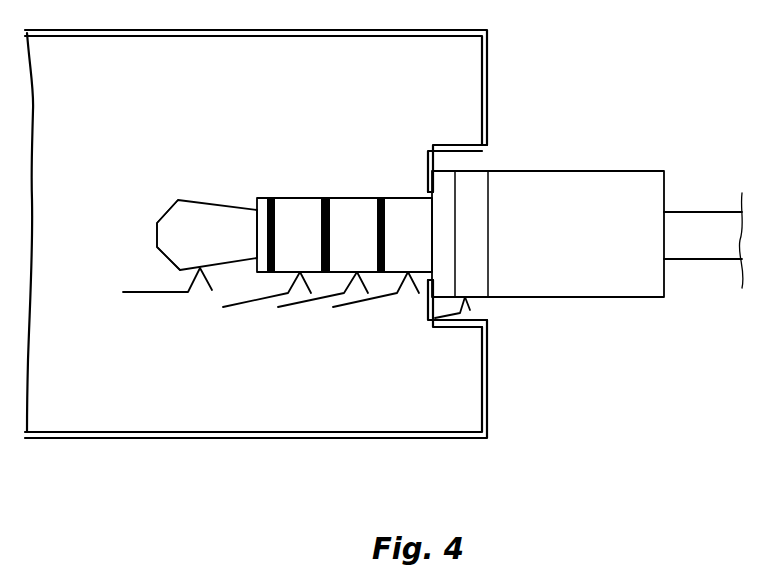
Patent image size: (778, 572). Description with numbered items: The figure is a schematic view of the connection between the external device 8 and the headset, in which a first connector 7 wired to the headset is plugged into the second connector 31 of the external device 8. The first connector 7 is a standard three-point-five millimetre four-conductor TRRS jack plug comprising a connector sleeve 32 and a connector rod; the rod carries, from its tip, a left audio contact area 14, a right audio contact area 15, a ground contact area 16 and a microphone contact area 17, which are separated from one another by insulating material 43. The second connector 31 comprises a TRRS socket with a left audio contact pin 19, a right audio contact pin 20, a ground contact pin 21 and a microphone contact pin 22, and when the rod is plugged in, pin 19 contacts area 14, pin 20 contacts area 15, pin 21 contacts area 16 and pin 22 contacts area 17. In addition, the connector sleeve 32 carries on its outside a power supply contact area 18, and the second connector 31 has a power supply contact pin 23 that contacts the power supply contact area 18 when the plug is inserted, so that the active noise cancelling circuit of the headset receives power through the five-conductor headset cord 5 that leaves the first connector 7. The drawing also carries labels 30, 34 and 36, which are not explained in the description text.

The headset cord 5 is at (690, 242).
The first connector 7 is at (548, 182).
The external device 8 is at (367, 434).
The left audio contact area 14 is at (229, 250).
The right audio contact area 15 is at (316, 250).
The ground contact area 16 is at (372, 250).
The microphone contact area 17 is at (426, 250).
The power supply contact area 18 is at (475, 217).
The left audio contact pin 19 is at (150, 293).
The right audio contact pin 20 is at (245, 307).
The ground contact pin 21 is at (308, 305).
The microphone contact pin 22 is at (378, 302).
The power supply contact pin 23 is at (470, 300).
The socket wall step 30 is at (455, 158).
The second connector 31 is at (427, 192).
The connector sleeve 32 is at (547, 275).
The element 34 is at (110, 571).
The plug tip end 36 is at (177, 237).
The insulating material 43 is at (271, 197).